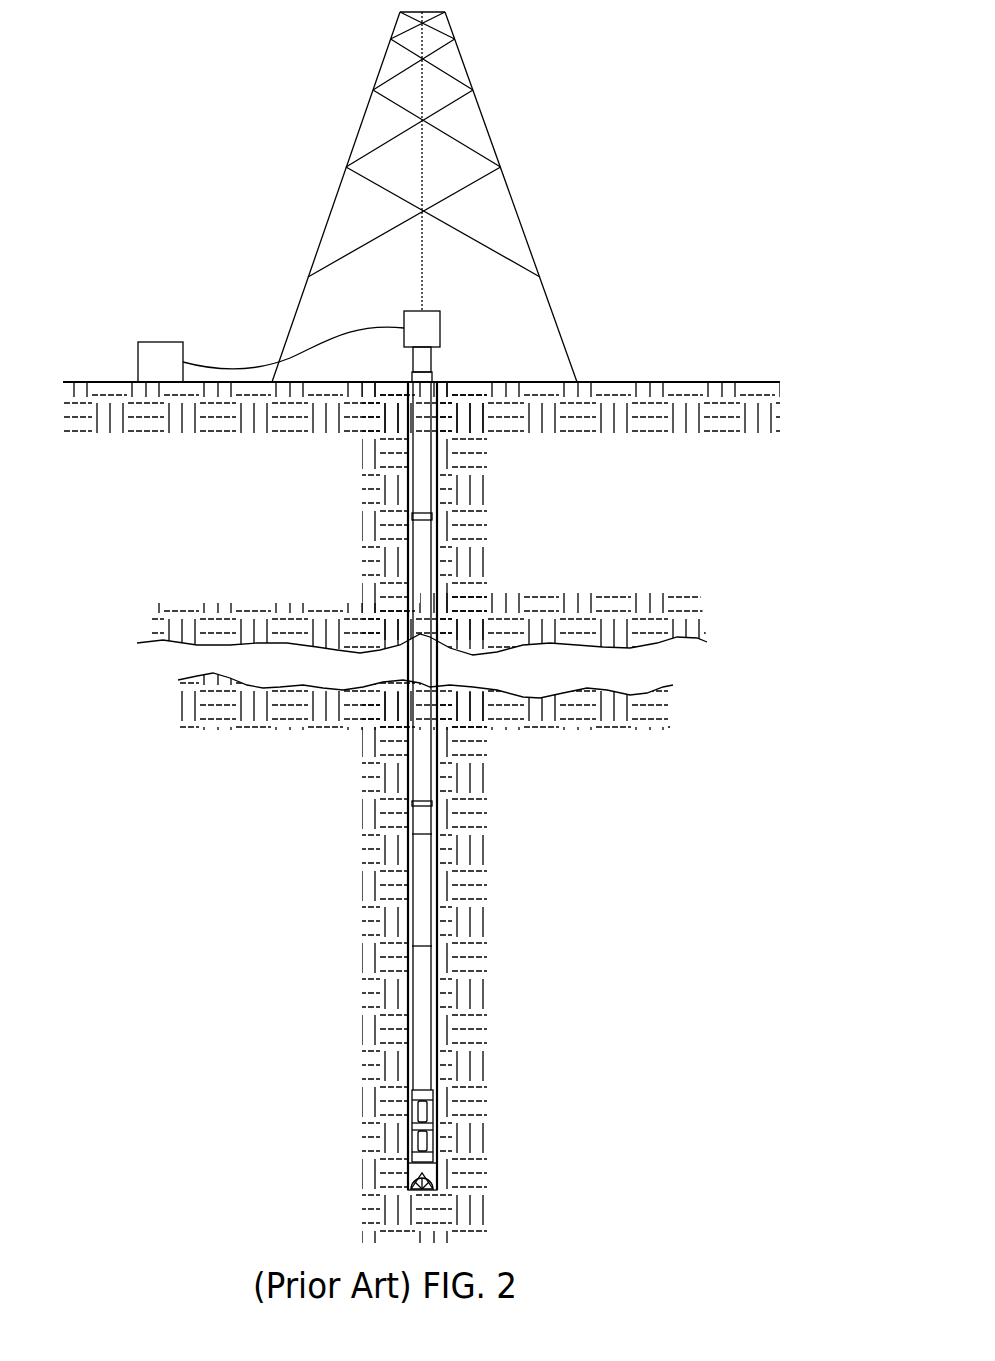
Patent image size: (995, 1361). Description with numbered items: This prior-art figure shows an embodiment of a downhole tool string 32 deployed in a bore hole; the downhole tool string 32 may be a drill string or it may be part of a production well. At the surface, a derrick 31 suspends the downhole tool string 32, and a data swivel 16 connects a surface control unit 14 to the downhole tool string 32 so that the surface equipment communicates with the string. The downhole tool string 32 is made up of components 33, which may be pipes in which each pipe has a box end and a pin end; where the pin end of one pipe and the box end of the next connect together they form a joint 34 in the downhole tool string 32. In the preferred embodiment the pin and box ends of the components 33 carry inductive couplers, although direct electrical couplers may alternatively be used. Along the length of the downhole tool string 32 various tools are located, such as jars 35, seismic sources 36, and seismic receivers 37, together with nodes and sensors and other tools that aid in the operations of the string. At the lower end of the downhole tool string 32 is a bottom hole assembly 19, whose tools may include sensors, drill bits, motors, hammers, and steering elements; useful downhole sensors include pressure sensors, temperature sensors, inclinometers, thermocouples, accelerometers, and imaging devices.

The surface control unit 14 is at (158, 353).
The data swivel 16 is at (425, 332).
The bottom hole assembly 19 is at (430, 1170).
The derrick 31 is at (512, 200).
The downhole tool string 32 is at (630, 935).
The components 33 is at (420, 493).
The joint 34 is at (413, 517).
The jars 35 is at (423, 822).
The seismic sources 36 is at (412, 1140).
The seismic receivers 37 is at (433, 1112).